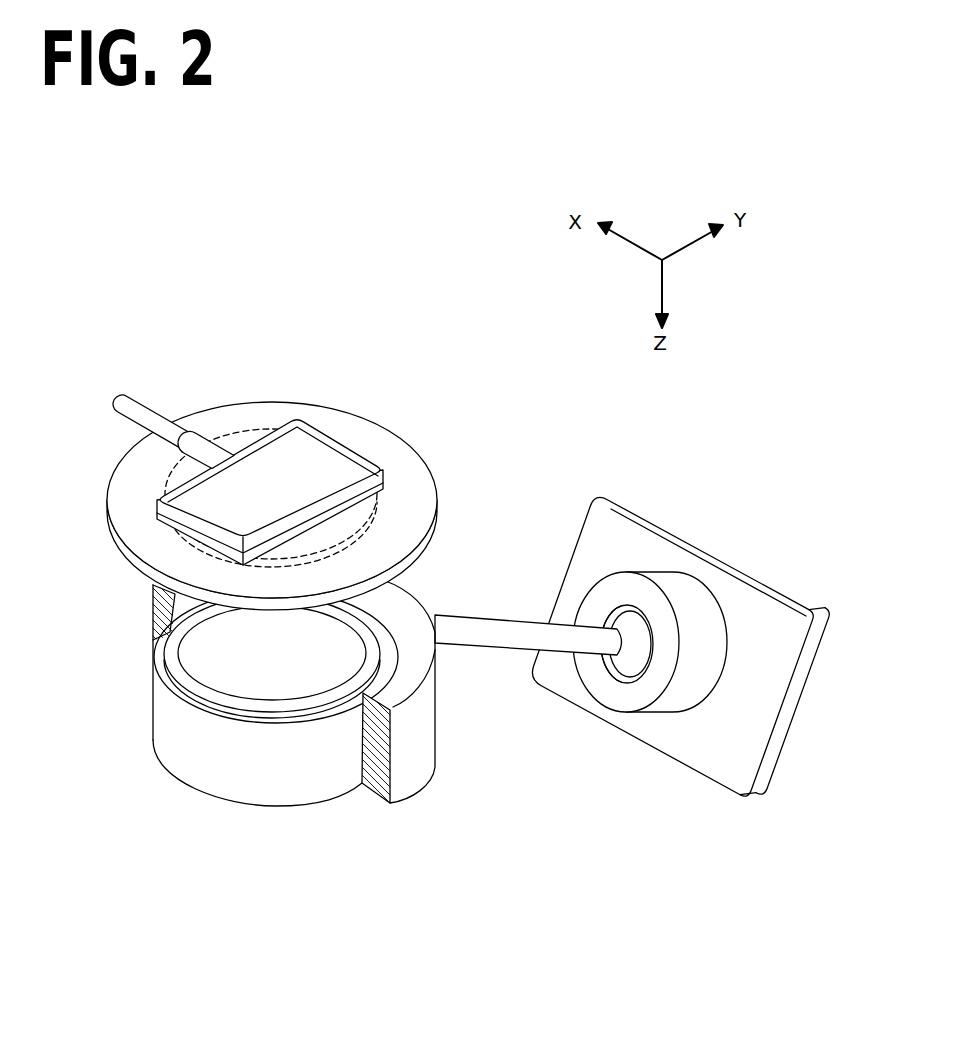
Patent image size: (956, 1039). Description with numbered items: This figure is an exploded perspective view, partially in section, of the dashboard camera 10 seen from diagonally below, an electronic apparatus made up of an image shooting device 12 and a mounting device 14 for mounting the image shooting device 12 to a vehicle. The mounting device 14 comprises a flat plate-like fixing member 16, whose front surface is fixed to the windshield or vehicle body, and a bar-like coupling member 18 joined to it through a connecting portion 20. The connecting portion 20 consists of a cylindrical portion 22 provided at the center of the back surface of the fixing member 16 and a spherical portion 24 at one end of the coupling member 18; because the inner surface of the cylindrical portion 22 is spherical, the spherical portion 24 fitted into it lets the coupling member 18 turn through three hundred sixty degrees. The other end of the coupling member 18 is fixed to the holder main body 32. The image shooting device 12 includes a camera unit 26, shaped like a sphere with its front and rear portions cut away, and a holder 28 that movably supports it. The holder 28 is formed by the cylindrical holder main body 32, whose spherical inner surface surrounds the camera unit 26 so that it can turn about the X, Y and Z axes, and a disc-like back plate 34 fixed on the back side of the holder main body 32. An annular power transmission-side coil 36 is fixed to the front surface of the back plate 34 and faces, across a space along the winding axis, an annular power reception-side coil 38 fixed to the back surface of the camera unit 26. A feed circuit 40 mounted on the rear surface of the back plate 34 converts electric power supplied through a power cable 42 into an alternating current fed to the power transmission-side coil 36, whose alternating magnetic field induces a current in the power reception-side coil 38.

The dashboard camera 10 is at (537, 488).
The image shooting device 12 is at (440, 736).
The mounting device 14 is at (495, 615).
The fixing member 16 is at (702, 535).
The coupling member 18 is at (453, 627).
The connecting portion 20 is at (653, 571).
The cylindrical portion 22 is at (679, 698).
The spherical portion 24 is at (620, 664).
The camera unit 26 is at (272, 807).
The holder 28 is at (440, 712).
The holder main body 32 is at (412, 768).
The back plate 34 is at (110, 478).
The power transmission-side coil 36 is at (239, 440).
The power reception-side coil 38 is at (166, 638).
The feed circuit 40 is at (299, 436).
The power cable 42 is at (142, 408).